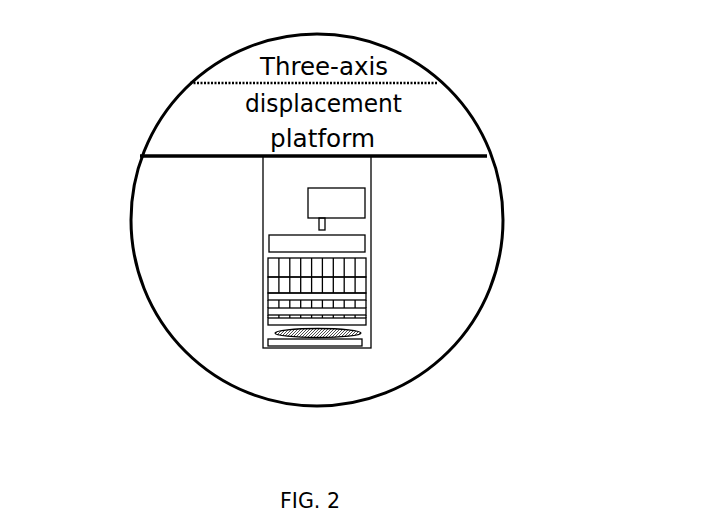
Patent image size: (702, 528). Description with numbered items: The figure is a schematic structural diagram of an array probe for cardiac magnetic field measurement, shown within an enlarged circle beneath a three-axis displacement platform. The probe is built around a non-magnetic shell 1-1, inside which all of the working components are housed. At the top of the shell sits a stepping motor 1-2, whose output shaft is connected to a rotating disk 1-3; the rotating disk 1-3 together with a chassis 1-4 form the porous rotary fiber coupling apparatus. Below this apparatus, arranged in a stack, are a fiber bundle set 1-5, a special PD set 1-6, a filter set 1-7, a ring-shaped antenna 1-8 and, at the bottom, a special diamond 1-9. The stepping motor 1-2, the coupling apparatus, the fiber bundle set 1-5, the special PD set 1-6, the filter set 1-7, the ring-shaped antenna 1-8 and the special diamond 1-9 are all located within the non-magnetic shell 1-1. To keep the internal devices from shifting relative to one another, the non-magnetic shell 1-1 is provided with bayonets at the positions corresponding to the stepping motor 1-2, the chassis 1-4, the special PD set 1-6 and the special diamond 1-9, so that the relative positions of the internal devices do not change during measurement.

The non-magnetic shell 1-1 is at (266, 350).
The stepping motor 1-2 is at (355, 187).
The rotating disk 1-3 is at (295, 233).
The chassis 1-4 is at (270, 267).
The fiber bundle set 1-5 is at (345, 283).
The special PD set 1-6 is at (270, 295).
The filter set 1-7 is at (270, 330).
The ring-shaped antenna 1-8 is at (360, 330).
The special diamond 1-9 is at (357, 345).